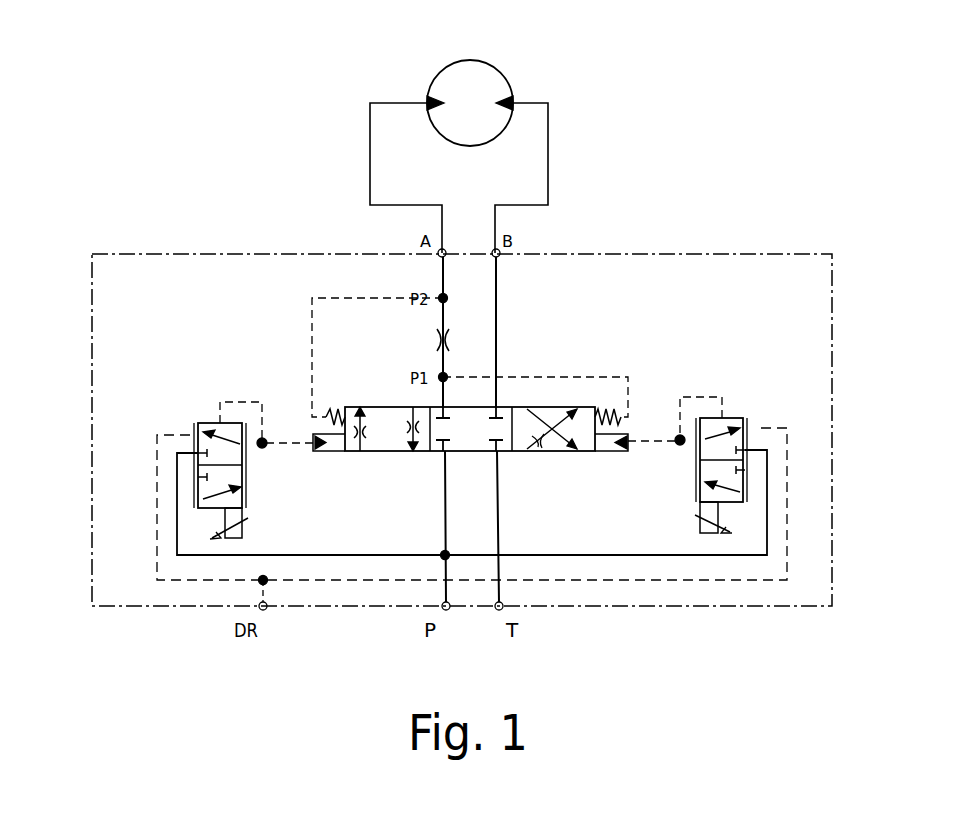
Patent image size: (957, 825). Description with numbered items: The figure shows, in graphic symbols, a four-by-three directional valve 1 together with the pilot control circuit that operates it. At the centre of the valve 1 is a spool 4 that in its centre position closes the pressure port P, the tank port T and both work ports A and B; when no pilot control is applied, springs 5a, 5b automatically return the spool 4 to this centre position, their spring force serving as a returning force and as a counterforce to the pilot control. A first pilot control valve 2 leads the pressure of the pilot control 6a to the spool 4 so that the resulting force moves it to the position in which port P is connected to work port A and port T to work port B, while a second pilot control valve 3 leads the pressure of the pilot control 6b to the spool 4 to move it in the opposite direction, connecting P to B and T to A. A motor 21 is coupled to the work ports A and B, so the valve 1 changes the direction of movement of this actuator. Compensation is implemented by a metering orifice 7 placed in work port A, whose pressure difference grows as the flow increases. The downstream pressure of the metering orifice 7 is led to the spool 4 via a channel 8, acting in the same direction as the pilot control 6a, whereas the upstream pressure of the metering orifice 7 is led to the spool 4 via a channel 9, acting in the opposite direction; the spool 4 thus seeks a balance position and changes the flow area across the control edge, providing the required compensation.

The valve 1 is at (252, 255).
The first pilot control valve 2 is at (136, 443).
The second pilot control valve 3 is at (772, 479).
The spool 4 is at (393, 437).
The spring 5a is at (328, 412).
The spring 5b is at (609, 407).
The pilot control 6a is at (314, 453).
The pilot control 6b is at (605, 441).
The metering orifice 7 is at (426, 344).
The channel 8 is at (373, 298).
The channel 9 is at (537, 378).
The motor 21 is at (350, 112).